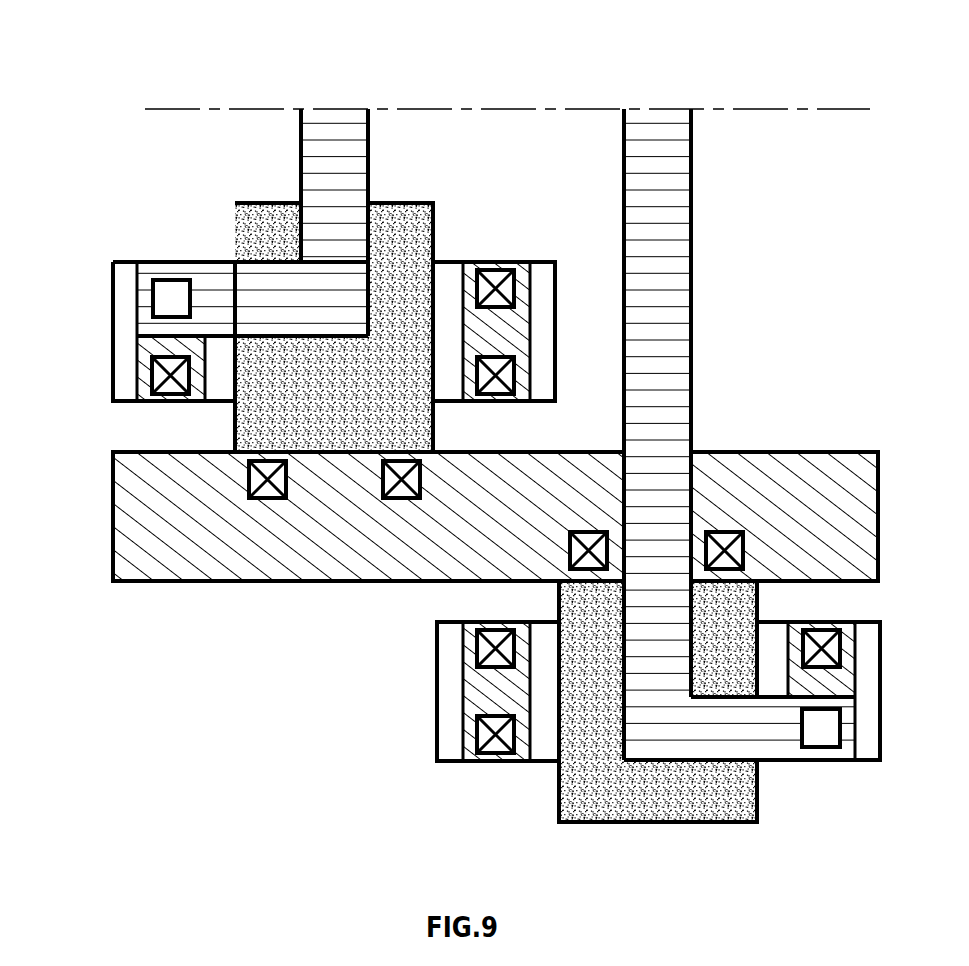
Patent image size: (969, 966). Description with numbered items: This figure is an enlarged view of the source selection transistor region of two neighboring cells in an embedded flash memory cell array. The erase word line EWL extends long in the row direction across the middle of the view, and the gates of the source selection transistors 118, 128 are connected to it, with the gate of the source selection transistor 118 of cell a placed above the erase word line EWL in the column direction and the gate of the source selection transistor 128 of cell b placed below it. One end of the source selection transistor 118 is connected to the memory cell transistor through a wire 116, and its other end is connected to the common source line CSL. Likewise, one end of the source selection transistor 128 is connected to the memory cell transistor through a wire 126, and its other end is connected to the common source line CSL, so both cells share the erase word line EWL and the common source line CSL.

The wire 116 is at (331, 117).
The source selection transistor 118 is at (150, 352).
The wire 126 is at (655, 117).
The source selection transistor 128 is at (822, 748).
The common source line CSL is at (541, 262).
The erase word line EWL is at (115, 516).